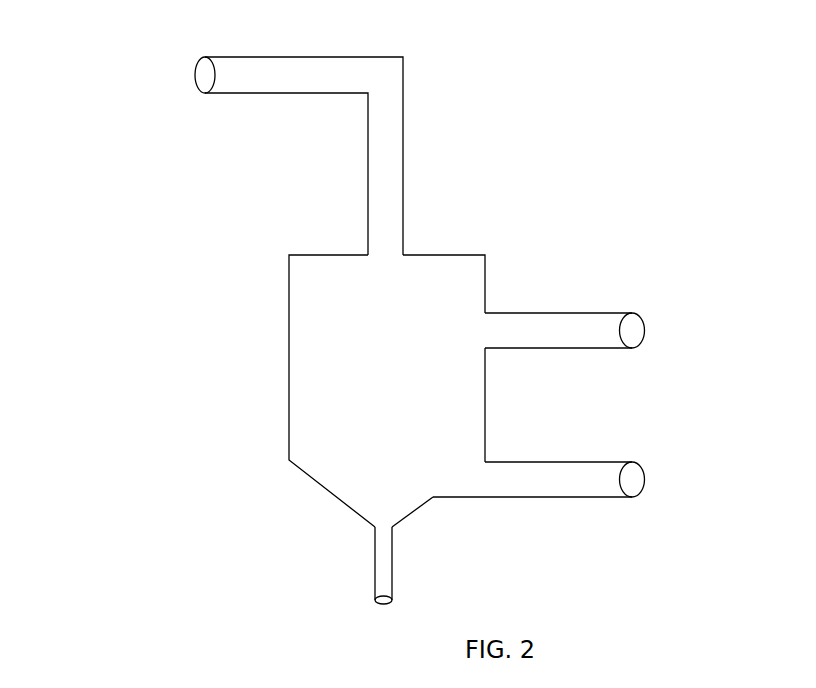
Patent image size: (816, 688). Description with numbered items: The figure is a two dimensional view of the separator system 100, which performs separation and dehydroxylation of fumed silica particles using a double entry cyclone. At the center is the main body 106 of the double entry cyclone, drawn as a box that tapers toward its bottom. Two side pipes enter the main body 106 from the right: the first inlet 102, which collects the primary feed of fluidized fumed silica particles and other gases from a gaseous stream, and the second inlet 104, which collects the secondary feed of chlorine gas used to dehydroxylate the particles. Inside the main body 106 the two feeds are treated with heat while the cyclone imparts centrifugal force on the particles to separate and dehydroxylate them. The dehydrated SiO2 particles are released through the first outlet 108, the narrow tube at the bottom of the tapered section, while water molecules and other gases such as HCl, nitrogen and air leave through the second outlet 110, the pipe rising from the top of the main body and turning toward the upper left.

The separator system 100 is at (46, 38).
The first inlet 102 is at (583, 478).
The second inlet 104 is at (565, 325).
The main body 106 is at (435, 310).
The first outlet 108 is at (382, 573).
The second outlet 110 is at (285, 77).